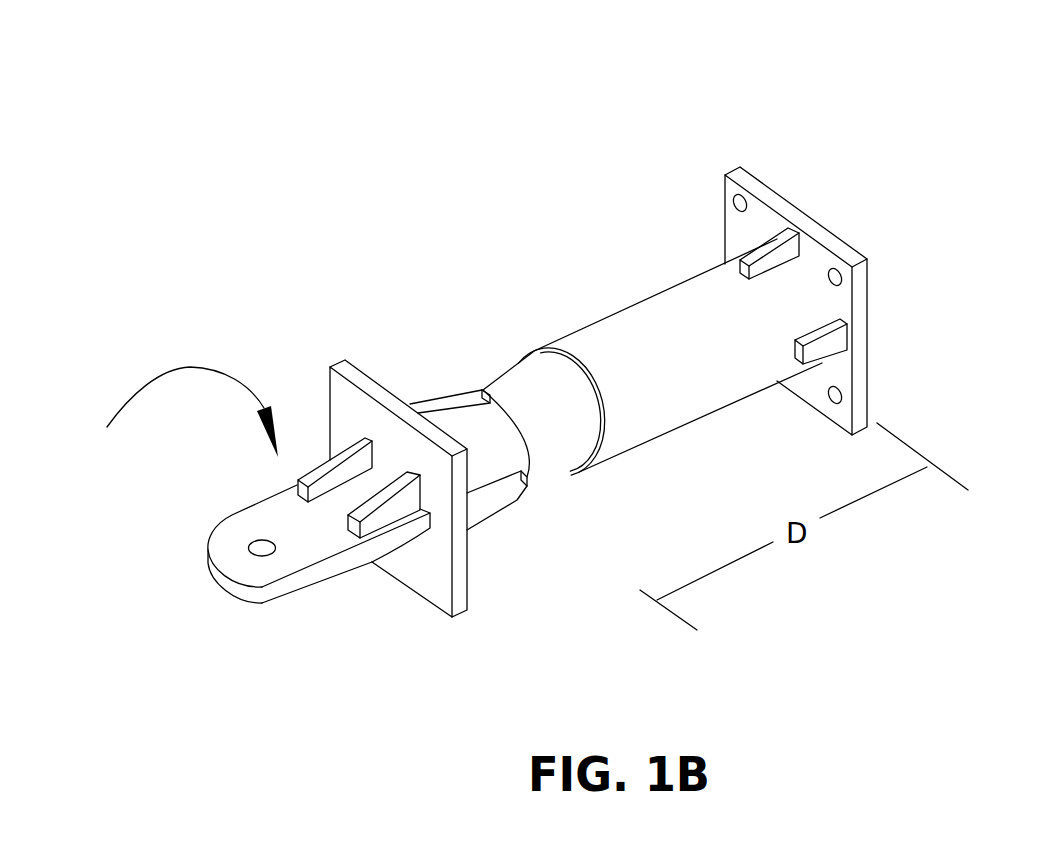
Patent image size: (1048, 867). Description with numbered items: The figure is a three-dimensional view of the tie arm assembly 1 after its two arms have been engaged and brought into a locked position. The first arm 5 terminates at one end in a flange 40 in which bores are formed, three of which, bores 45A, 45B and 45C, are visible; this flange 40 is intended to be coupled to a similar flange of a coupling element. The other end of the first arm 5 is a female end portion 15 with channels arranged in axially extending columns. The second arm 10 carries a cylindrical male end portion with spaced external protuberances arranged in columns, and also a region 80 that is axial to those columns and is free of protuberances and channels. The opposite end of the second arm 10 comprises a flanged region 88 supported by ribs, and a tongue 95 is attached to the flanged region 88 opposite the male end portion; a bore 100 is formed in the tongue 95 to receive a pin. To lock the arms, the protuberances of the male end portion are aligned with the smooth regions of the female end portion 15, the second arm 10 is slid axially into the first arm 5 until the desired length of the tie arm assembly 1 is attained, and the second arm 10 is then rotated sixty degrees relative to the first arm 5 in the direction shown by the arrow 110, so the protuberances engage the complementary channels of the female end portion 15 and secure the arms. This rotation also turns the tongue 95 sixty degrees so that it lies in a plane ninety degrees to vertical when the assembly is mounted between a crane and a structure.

The tie arm assembly 1 is at (541, 223).
The first arm 5 is at (599, 257).
The second arm 10 is at (425, 335).
The female end portion 15 is at (518, 366).
The flange 40 is at (842, 248).
The bore 45A is at (733, 204).
The bore 45B is at (832, 283).
The bore 45C is at (830, 396).
The region 80 is at (548, 485).
The flanged region 88 is at (345, 362).
The tongue 95 is at (262, 604).
The bore 100 is at (262, 540).
The arrow 110 is at (189, 367).